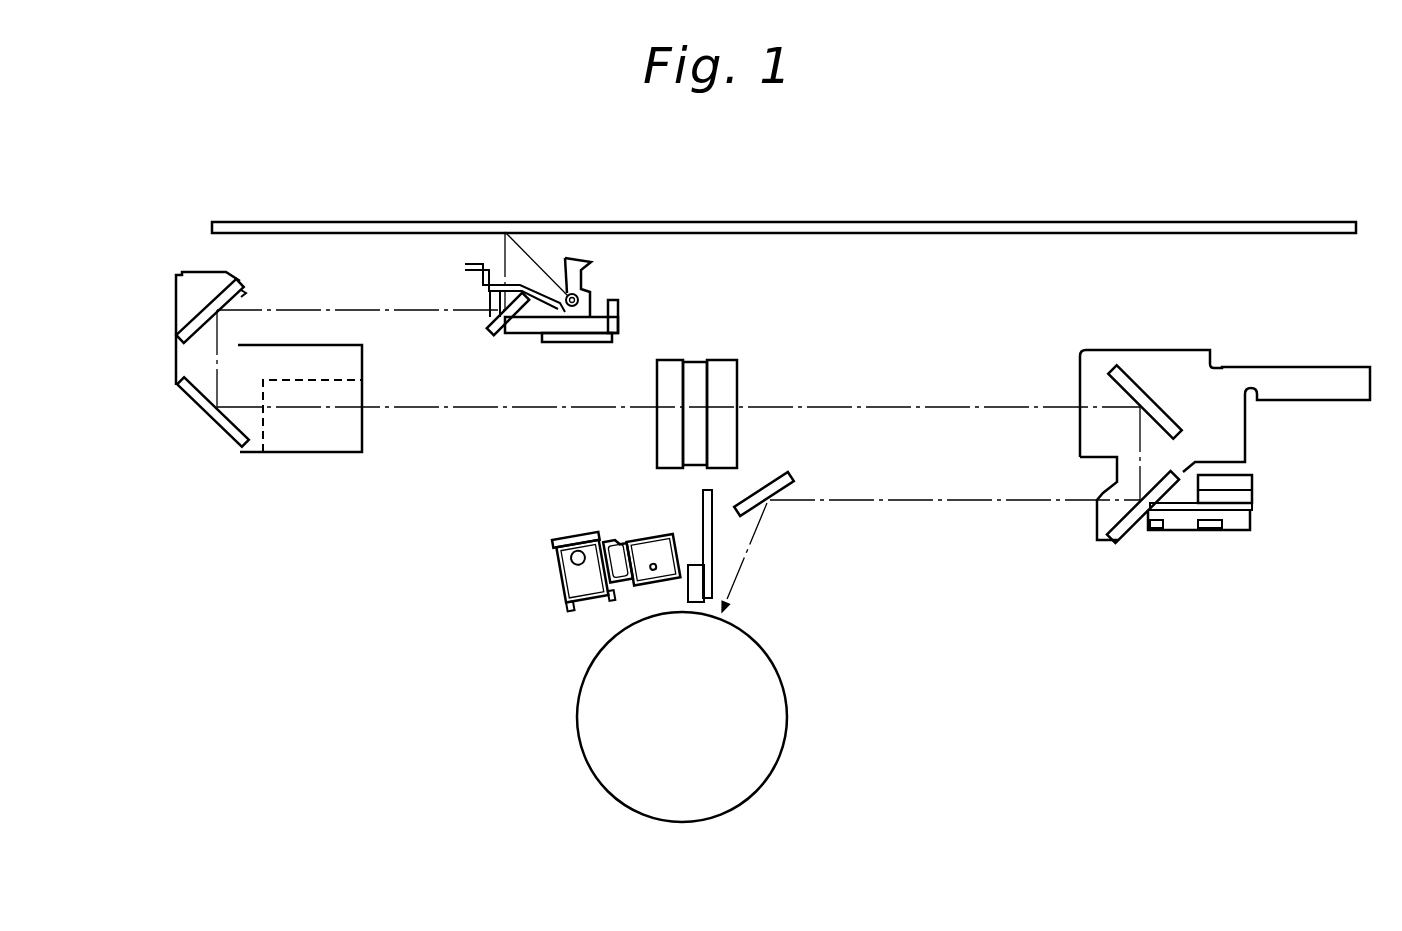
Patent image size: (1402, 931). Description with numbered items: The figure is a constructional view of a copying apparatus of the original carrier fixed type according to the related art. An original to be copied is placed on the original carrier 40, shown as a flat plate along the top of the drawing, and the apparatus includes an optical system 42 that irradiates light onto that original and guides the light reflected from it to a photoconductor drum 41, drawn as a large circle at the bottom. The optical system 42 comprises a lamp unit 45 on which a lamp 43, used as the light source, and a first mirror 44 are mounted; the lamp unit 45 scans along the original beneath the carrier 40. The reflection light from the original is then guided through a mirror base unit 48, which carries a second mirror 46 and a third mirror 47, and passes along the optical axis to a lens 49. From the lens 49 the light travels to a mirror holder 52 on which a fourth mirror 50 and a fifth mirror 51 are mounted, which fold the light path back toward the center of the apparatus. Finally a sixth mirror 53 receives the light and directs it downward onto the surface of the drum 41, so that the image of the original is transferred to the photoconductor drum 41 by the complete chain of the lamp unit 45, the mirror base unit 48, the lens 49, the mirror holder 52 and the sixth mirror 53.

The original carrier 40 is at (363, 222).
The photoconductor drum 41 is at (773, 727).
The optical system 42 is at (233, 408).
The lamp 43 is at (566, 258).
The first mirror 44 is at (492, 327).
The lamp unit 45 is at (632, 319).
The second mirror 46 is at (176, 305).
The third mirror 47 is at (200, 402).
The mirror base unit 48 is at (167, 360).
The lens 49 is at (647, 430).
The fourth mirror 50 is at (1132, 378).
The fifth mirror 51 is at (1132, 533).
The mirror holder 52 is at (1225, 456).
The sixth mirror 53 is at (790, 476).